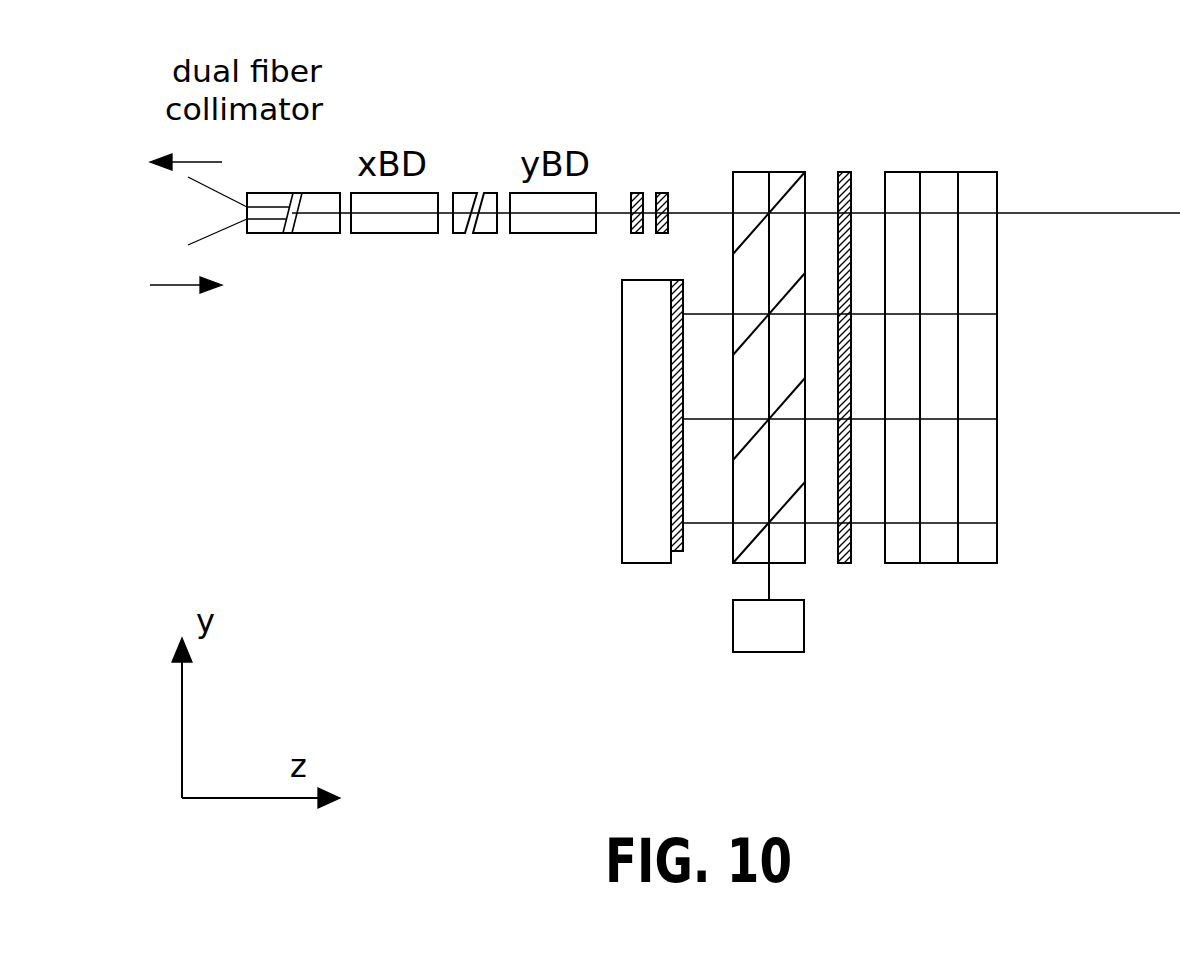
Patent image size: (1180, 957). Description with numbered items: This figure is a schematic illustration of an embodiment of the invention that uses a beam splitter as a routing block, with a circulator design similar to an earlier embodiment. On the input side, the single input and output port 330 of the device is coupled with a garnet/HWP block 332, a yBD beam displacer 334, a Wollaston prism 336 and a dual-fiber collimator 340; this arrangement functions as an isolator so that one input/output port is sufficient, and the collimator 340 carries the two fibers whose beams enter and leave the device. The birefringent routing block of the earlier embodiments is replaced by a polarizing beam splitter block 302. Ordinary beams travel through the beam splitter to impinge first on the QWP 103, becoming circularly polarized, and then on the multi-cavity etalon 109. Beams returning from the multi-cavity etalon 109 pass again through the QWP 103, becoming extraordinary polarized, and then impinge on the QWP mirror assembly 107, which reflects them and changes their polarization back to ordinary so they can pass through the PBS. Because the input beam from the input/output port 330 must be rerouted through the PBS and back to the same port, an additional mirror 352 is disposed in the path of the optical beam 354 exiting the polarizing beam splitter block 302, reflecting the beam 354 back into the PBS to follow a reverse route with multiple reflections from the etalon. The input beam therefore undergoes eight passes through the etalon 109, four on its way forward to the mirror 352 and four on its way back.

The dual-fiber collimator 340 is at (313, 233).
The Wollaston prism 336 is at (478, 186).
The yBD beam displacer 334 is at (537, 233).
The garnet/HWP block 332 is at (650, 186).
The input and output port 330 is at (733, 213).
The QWP mirror assembly 107 is at (622, 470).
The polarizing beam splitter block 302 is at (792, 172).
The QWP 103 is at (842, 565).
The multi-cavity etalon 109 is at (938, 172).
The additional mirror 352 is at (733, 641).
The optical beam 354 is at (768, 582).